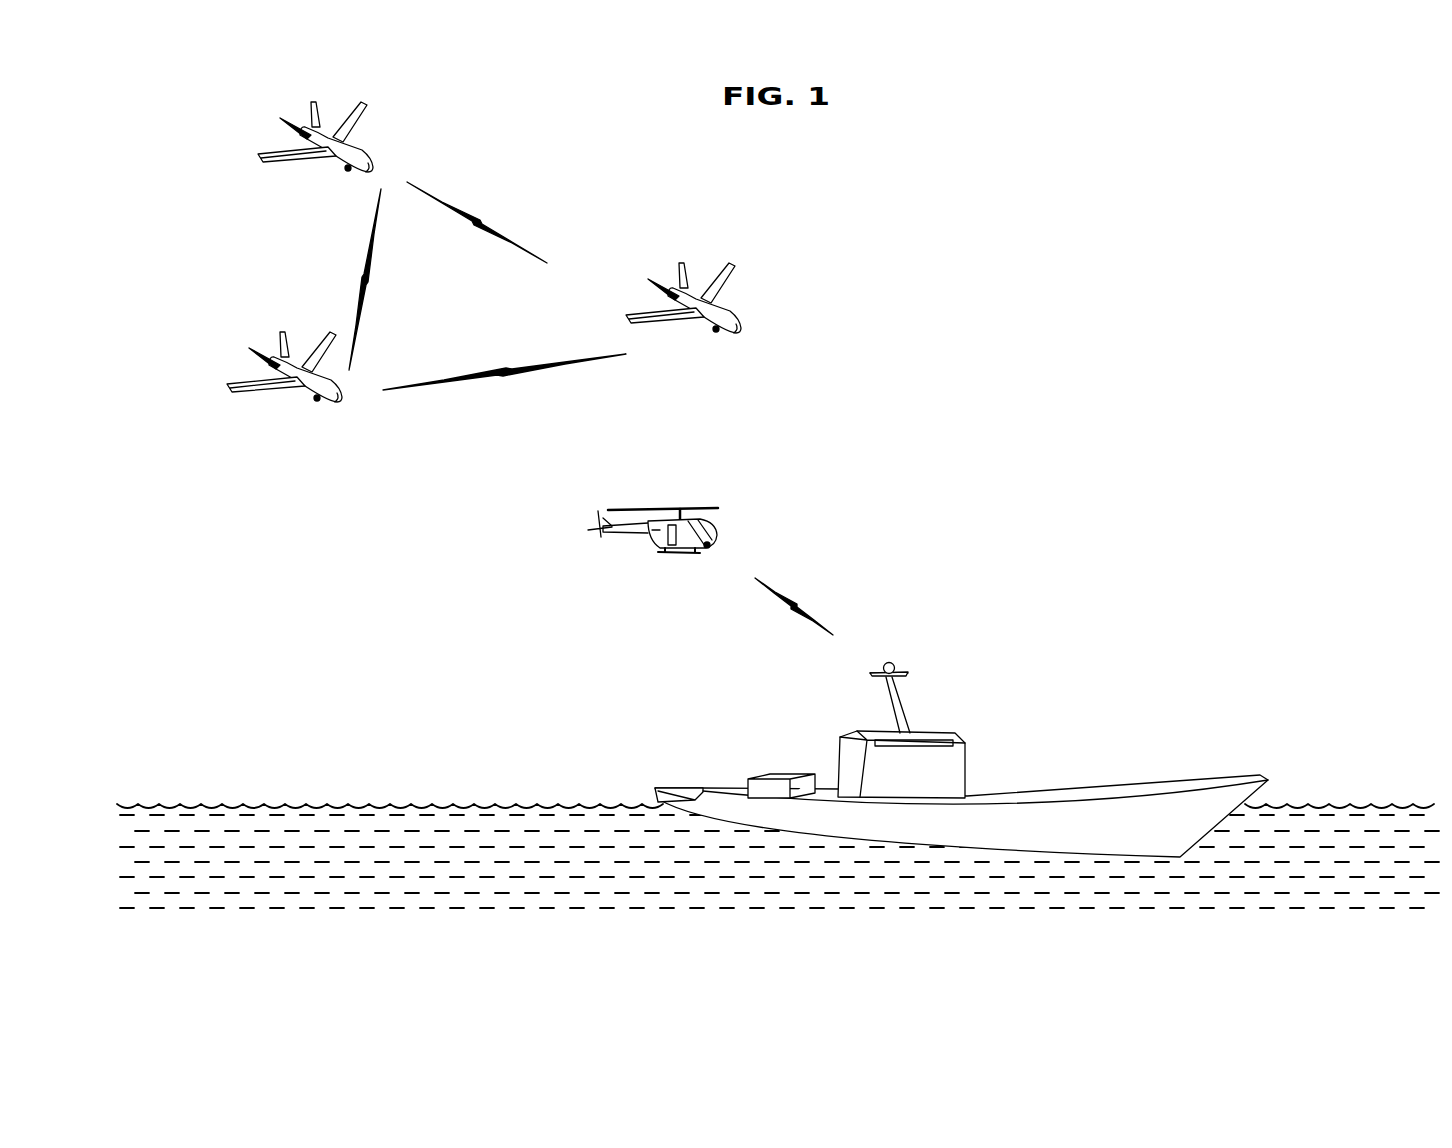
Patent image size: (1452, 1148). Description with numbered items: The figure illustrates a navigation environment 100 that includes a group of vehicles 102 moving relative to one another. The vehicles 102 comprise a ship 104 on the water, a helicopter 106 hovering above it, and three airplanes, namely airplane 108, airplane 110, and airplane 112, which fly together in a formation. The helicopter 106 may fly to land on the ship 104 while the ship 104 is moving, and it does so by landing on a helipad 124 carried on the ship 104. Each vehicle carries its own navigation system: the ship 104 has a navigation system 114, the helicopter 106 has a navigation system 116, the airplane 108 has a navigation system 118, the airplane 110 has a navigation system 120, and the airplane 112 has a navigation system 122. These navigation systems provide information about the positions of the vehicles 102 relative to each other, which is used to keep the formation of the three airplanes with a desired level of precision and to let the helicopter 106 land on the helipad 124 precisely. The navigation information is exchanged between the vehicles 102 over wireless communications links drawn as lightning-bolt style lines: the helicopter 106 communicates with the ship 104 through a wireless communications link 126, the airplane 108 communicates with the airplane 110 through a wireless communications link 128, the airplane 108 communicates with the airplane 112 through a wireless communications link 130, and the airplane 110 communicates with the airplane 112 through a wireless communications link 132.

The navigation environment 100 is at (1117, 195).
The vehicles 102 is at (972, 278).
The ship 104 is at (1247, 775).
The helicopter 106 is at (618, 535).
The airplane 108 is at (267, 128).
The airplane 110 is at (628, 305).
The airplane 112 is at (218, 382).
The navigation system 114 is at (897, 664).
The navigation system 116 is at (707, 547).
The navigation system 118 is at (348, 170).
The navigation system 120 is at (716, 331).
The navigation system 122 is at (317, 400).
The helipad 124 is at (797, 774).
The wireless communications link 126 is at (787, 595).
The wireless communications link 128 is at (458, 212).
The wireless communications link 130 is at (372, 253).
The wireless communications link 132 is at (517, 372).